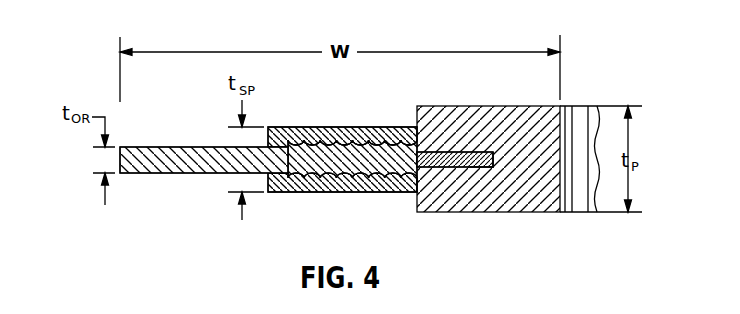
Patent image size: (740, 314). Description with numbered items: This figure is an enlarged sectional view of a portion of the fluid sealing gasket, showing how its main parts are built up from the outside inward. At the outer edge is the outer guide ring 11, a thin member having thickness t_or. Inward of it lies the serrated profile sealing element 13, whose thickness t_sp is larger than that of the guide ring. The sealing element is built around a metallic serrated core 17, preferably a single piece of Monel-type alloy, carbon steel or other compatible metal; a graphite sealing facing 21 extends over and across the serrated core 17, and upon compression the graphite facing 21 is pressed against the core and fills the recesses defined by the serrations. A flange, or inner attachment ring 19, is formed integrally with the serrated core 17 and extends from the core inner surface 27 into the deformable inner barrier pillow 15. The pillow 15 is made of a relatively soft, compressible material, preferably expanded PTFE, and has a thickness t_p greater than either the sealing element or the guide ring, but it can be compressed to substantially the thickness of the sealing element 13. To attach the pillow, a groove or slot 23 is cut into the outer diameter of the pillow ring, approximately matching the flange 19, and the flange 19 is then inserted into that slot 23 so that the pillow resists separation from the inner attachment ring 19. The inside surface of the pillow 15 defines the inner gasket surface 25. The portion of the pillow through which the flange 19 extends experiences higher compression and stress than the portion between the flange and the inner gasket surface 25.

The outer guide ring 11 is at (147, 147).
The serrated profile sealing element 13 is at (370, 130).
The deformable inner barrier pillow 15 is at (505, 107).
The serrated core 17 is at (298, 136).
The flange (inner attachment ring) 19 is at (460, 151).
The graphite sealing facing 21 is at (337, 139).
The slot 23 is at (487, 168).
The inner gasket surface 25 is at (562, 190).
The inner surface of the serrated profile core 27 is at (420, 188).